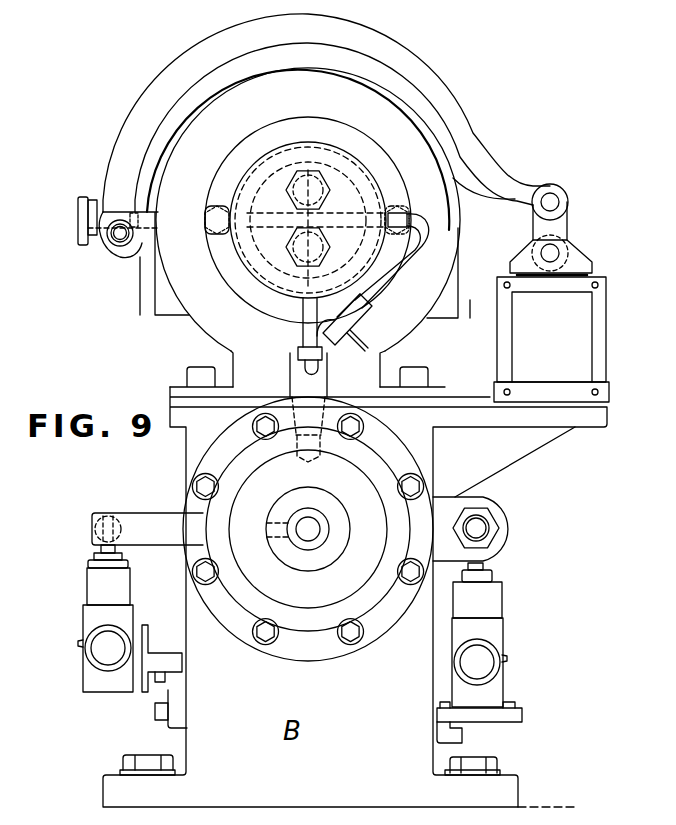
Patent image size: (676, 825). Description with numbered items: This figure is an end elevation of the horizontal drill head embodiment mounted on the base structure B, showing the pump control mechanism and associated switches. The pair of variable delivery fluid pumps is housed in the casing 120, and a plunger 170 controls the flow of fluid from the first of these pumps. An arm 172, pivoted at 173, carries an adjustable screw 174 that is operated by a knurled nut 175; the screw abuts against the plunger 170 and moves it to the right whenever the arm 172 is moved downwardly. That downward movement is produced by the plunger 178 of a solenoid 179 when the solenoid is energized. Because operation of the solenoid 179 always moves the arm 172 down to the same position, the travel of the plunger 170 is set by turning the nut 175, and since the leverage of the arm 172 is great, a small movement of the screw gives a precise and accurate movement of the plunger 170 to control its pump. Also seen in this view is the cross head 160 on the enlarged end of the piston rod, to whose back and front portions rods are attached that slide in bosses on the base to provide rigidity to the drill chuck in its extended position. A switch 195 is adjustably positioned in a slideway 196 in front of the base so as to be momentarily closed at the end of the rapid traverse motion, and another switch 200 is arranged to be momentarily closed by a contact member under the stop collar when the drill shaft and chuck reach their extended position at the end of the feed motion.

The casing 120 is at (308, 205).
The cross head 160 is at (445, 510).
The plunger 170 is at (157, 212).
The arm 172 is at (200, 58).
The pivot 173 is at (120, 235).
The adjustable screw 174 is at (127, 212).
The knurled nut 175 is at (85, 222).
The plunger of solenoid 178 is at (556, 222).
The solenoid 179 is at (572, 327).
The switch 195 is at (105, 590).
The slideway 196 is at (148, 688).
The switch 200 is at (488, 605).